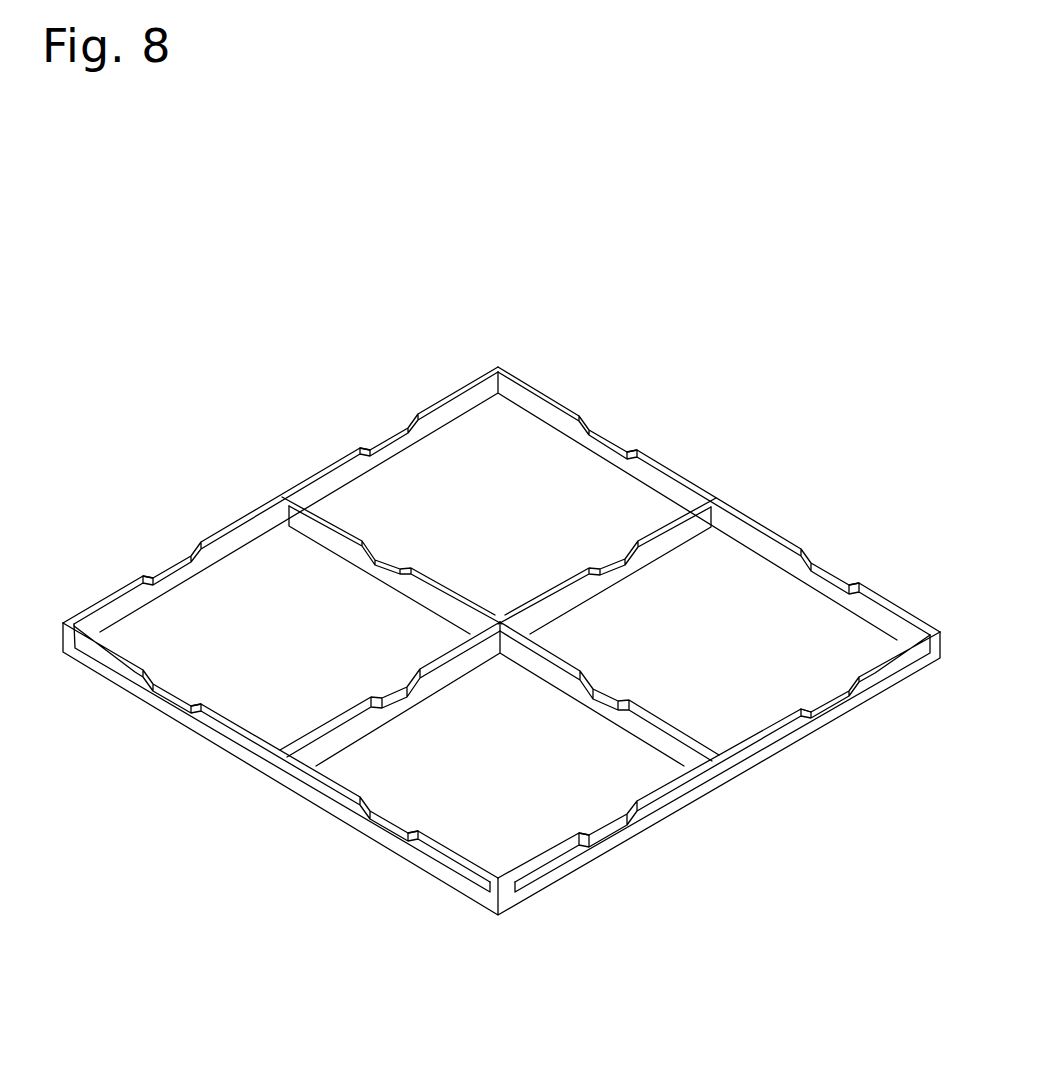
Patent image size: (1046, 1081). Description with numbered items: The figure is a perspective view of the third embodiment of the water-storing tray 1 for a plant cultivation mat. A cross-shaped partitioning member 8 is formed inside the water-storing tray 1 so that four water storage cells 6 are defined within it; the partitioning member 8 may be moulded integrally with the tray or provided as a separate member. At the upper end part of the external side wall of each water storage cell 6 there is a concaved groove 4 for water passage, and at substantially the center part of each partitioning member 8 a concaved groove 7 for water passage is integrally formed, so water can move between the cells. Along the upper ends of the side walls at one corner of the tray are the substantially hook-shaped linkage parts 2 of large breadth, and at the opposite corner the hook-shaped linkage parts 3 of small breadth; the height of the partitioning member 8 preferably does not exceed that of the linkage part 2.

The water-storing tray 1 is at (541, 384).
The linkage part of large breadth 2 is at (768, 530).
The linkage part of small breadth 3 is at (102, 606).
The concaved groove for water passage 4 is at (590, 436).
The water storage cell 6 is at (475, 445).
The concaved groove for water passage 7 is at (388, 562).
The partitioning member 8 is at (337, 725).